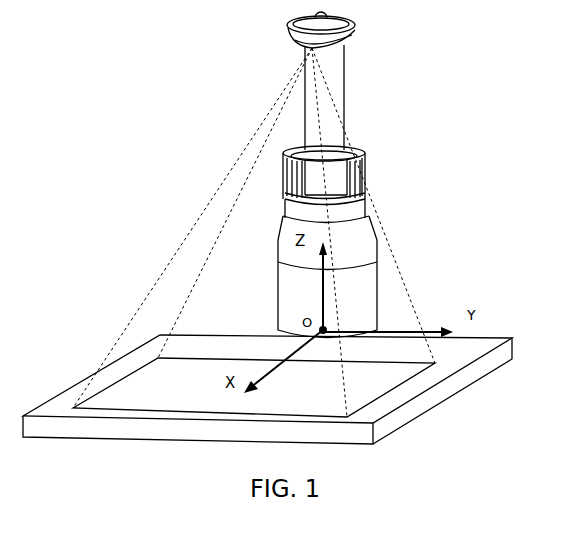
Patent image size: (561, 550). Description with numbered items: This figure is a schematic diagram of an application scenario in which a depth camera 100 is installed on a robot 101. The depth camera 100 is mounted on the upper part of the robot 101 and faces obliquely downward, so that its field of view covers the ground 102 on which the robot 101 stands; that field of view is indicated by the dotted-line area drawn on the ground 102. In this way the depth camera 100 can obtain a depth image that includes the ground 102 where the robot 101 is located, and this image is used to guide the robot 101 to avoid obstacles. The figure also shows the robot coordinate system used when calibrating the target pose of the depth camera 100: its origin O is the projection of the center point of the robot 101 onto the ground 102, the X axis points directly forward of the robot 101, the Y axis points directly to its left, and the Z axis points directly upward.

The depth camera 100 is at (355, 28).
The robot 101 is at (358, 243).
The ground 102 is at (402, 395).